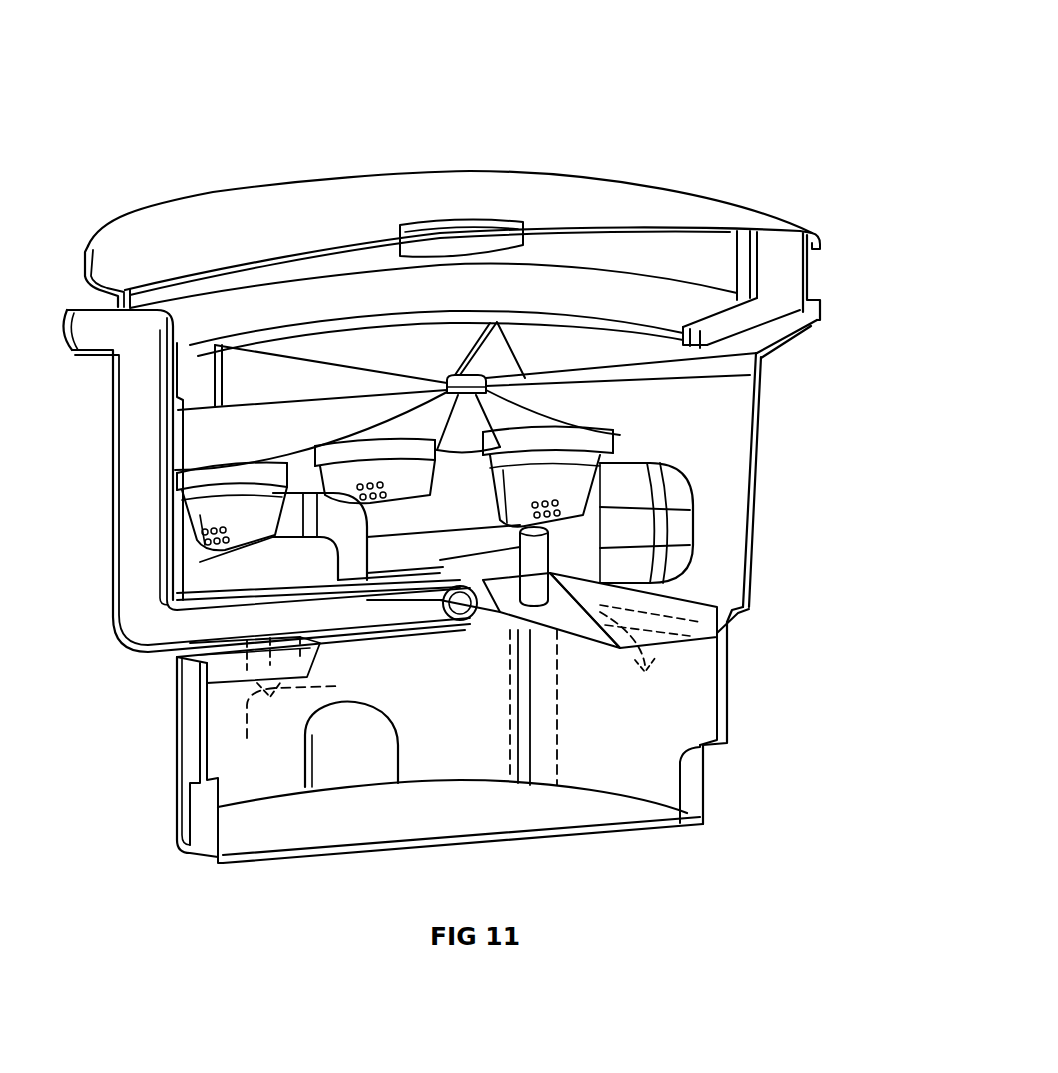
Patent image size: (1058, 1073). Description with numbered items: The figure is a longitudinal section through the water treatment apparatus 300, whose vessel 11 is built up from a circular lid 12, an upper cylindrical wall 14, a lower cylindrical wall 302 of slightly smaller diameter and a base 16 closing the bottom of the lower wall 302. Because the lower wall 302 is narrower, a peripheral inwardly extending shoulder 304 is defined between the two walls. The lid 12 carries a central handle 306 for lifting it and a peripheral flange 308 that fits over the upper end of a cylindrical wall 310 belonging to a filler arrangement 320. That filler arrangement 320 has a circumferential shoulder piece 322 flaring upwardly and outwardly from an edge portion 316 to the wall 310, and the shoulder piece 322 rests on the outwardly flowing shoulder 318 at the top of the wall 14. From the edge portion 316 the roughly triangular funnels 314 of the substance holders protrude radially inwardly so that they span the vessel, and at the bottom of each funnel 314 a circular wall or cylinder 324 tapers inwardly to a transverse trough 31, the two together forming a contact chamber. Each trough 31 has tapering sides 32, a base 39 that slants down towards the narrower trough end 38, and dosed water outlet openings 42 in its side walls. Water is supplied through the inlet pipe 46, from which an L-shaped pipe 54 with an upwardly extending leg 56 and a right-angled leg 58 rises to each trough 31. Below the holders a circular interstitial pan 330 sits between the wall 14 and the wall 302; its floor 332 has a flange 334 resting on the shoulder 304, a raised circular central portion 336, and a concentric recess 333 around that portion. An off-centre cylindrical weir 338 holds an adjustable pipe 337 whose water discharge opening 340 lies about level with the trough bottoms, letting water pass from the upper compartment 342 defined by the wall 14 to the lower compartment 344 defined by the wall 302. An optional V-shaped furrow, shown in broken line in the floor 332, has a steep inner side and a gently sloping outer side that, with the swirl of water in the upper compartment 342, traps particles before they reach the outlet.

The water treatment apparatus 300 is at (733, 110).
The lid 12 is at (613, 200).
The central handle 306 is at (447, 207).
The peripheral flange 308 is at (822, 243).
The filler arrangement 320 is at (822, 270).
The cylindrical wall 310 is at (812, 282).
The circumferential shoulder piece 322 is at (780, 323).
The outwardly flowing shoulder 318 is at (780, 343).
The edge portion 316 is at (647, 327).
The funnel 314 is at (283, 428).
The circular wall or cylinder 324 is at (613, 452).
The cylindrical wall 14 is at (753, 463).
The vessel 11 is at (817, 497).
The water pipe 46 is at (147, 383).
The dosed water outlet openings 42 is at (212, 527).
The trough 31 is at (162, 496).
The narrower trough end 38 is at (188, 525).
The trough base 39 is at (197, 550).
The trough side 32 is at (250, 543).
The L-shaped pipe 54 is at (263, 566).
The pipe leg 58 is at (290, 585).
The upwardly extending leg 56 is at (340, 552).
The water discharge opening 340 is at (537, 530).
The upper compartment 342 is at (707, 526).
The cylindrical weir 338 is at (555, 563).
The pipe 337 is at (530, 592).
The circular central portion 336 is at (557, 623).
The interstitial pan 330 is at (573, 645).
The concentric trough or recess 333 is at (235, 653).
The lower compartment 344 is at (760, 737).
The flange 334 is at (747, 607).
The peripheral inwardly extending shoulder 304 is at (740, 613).
The floor 332 is at (713, 657).
The cylindrical wall 302 is at (720, 703).
The base 16 is at (317, 832).